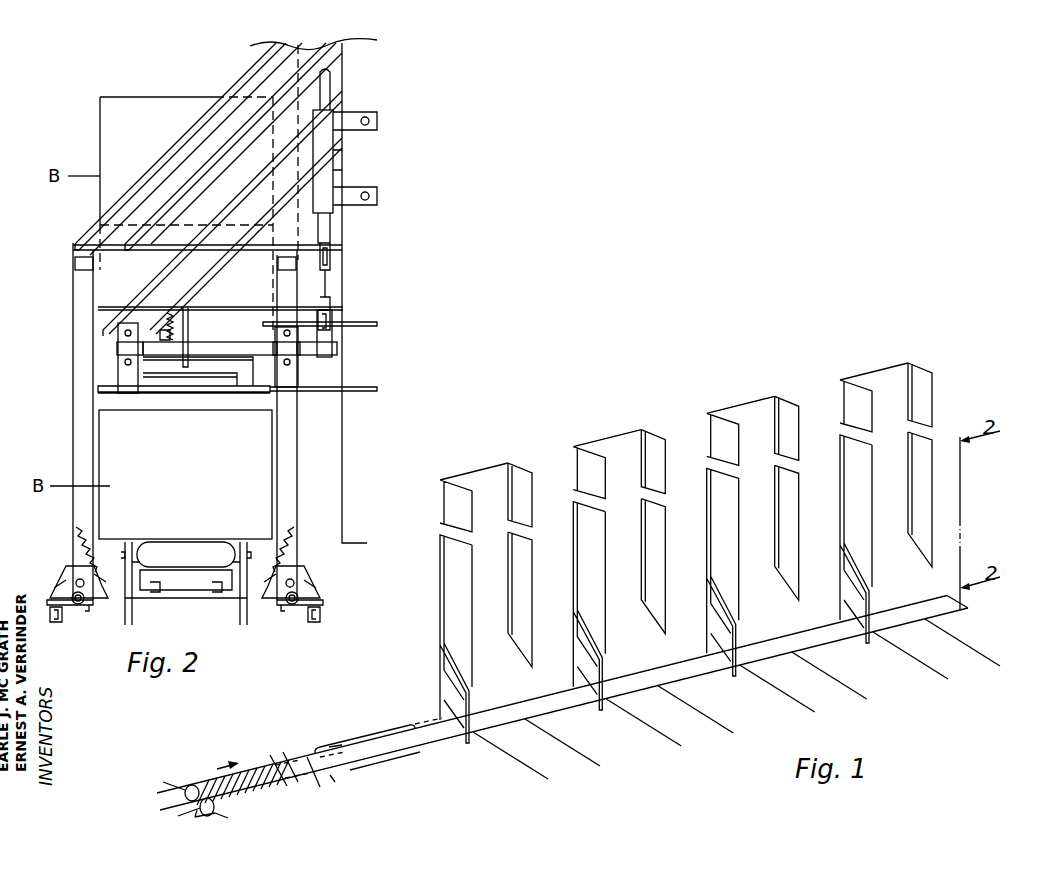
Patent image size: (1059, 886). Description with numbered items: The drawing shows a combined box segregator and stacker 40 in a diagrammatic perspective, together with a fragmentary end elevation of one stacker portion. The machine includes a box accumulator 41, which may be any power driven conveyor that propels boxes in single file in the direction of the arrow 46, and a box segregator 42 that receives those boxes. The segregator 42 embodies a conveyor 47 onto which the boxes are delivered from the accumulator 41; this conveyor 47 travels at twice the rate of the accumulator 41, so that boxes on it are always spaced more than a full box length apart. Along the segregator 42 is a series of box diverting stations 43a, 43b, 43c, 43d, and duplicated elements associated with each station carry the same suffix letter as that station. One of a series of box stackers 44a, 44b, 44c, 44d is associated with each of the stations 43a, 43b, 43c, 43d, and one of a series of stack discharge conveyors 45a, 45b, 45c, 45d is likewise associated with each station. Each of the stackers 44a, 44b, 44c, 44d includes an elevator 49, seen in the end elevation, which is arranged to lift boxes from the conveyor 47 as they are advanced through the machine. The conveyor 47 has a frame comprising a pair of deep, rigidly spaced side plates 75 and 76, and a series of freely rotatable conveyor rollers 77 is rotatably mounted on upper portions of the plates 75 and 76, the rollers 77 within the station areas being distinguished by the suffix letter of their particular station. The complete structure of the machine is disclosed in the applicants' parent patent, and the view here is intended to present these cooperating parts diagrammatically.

In FIG. 1, the combined box segregator and stacker 40 is at (408, 639).
In FIG. 1, the box accumulator 41 is at (265, 768).
In FIG. 1, the box segregator 42 is at (380, 727).
In FIG. 1, the box diverting station 43a is at (496, 718).
In FIG. 1, the box diverting station 43b is at (628, 687).
In FIG. 1, the box diverting station 43c is at (757, 655).
In FIG. 1, the box diverting station 43d is at (890, 620).
In FIG. 1, the box stacker 44a is at (478, 475).
In FIG. 1, the box stacker 44b is at (612, 441).
In FIG. 1, the box stacker 44c is at (737, 413).
In FIG. 1, the box stacker 44d is at (875, 373).
In FIG. 1, the stack discharge conveyor 45a is at (563, 745).
In FIG. 1, the stack discharge conveyor 45b is at (717, 722).
In FIG. 1, the stack discharge conveyor 45c is at (842, 688).
In FIG. 1, the stack discharge conveyor 45d is at (970, 650).
In FIG. 1, the arrow 46 is at (212, 773).
In FIG. 2, the conveyor 47 is at (138, 628).
In FIG. 1, the conveyor 47 is at (360, 766).
In FIG. 2, the elevator 49 is at (68, 634).
In FIG. 2, the side plate 75 is at (245, 618).
In FIG. 2, the side plate 76 is at (133, 613).
In FIG. 2, the conveyor roller 77 is at (186, 554).